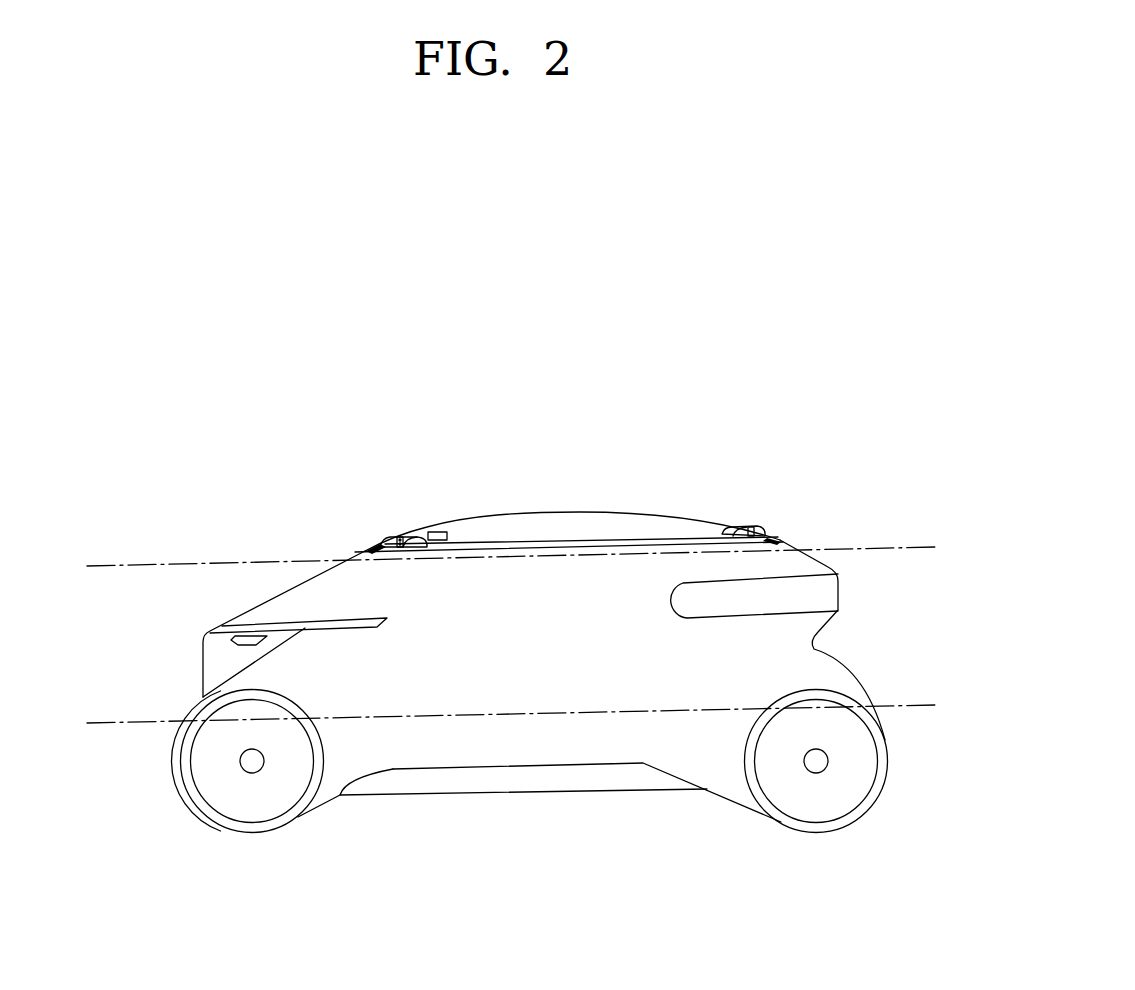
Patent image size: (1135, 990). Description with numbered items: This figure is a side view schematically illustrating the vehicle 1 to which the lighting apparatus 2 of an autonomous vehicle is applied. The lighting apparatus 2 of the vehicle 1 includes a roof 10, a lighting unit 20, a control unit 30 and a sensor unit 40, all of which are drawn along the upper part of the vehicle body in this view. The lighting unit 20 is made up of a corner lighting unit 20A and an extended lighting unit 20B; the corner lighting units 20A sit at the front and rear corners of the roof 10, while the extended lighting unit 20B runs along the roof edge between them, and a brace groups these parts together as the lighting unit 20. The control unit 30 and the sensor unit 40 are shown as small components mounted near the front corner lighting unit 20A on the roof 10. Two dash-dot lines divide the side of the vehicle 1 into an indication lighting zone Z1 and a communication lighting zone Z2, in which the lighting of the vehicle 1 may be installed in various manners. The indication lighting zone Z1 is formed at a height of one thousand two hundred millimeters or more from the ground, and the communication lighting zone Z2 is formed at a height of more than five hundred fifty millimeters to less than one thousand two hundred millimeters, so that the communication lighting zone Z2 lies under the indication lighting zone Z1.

The vehicle 1 is at (255, 578).
The lighting apparatus 2 is at (582, 500).
The roof 10 is at (520, 540).
The lighting unit 20 is at (577, 457).
The corner lighting unit 20A is at (410, 535).
The extended lighting unit 20B is at (643, 540).
The control unit 30 is at (445, 532).
The sensor unit 40 is at (378, 548).
The indication lighting zone Z1 is at (107, 435).
The communication lighting zone Z2 is at (107, 573).